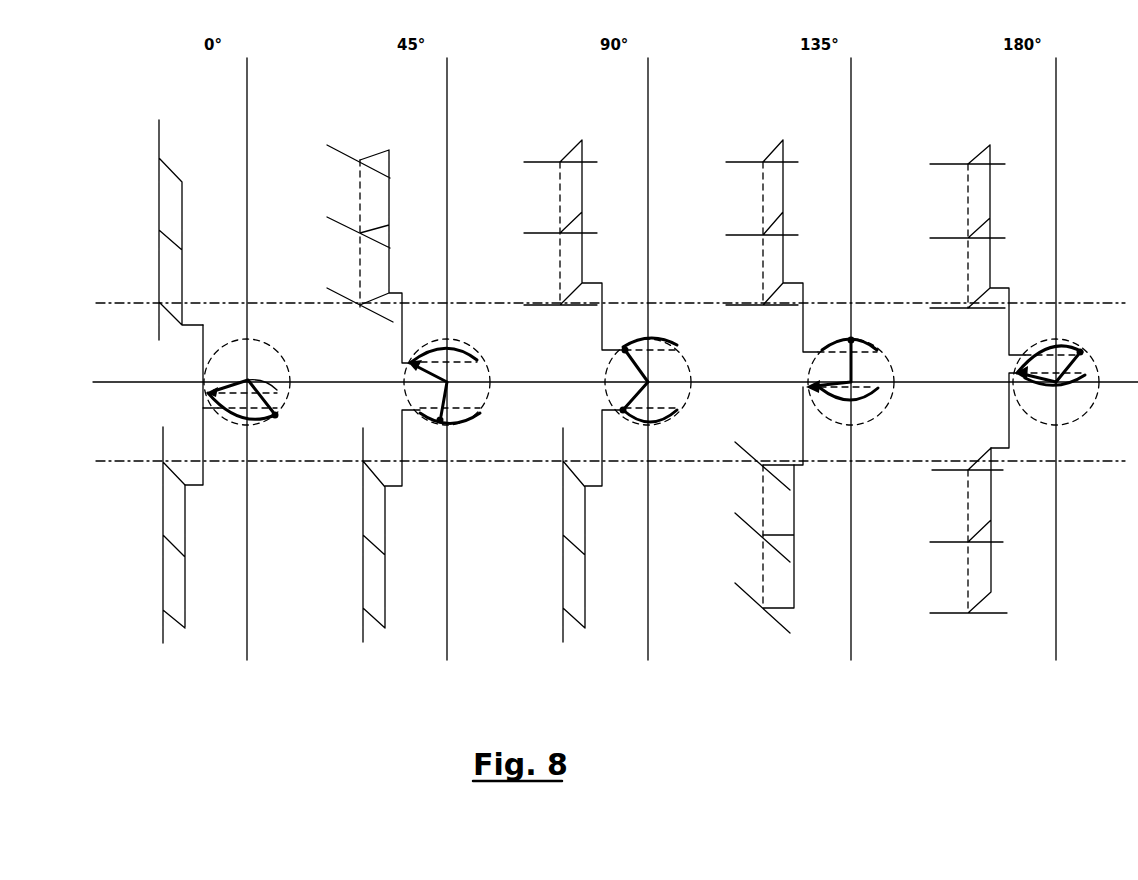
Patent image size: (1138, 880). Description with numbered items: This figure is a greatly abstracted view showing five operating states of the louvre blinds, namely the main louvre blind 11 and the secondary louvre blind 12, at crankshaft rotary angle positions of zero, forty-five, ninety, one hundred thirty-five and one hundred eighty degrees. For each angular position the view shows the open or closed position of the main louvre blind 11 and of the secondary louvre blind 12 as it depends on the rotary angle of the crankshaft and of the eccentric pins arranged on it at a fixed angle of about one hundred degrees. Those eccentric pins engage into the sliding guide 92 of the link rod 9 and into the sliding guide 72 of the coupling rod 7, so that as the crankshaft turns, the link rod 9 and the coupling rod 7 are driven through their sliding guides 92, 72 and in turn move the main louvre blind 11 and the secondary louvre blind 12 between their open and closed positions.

The secondary louvre blind 12 is at (172, 268).
The link rod 9 is at (203, 358).
The coupling rod 7 is at (203, 435).
The main louvre blind 11 is at (173, 500).
The sliding guide 92 is at (675, 343).
The sliding guide 72 is at (660, 422).